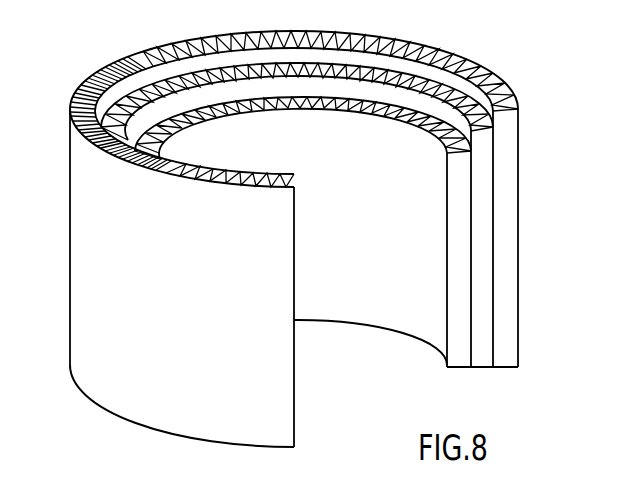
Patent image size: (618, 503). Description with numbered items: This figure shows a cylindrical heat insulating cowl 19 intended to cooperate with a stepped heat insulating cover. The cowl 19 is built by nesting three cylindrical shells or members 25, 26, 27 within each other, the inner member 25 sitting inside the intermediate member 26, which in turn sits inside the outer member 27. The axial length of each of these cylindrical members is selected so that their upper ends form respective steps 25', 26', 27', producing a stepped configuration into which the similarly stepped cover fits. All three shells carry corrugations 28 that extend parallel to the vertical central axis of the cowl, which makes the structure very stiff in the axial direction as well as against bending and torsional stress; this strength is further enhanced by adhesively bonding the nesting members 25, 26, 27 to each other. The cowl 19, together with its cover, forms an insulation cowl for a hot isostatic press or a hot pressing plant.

The heat insulating cowl 19 is at (80, 66).
The cylindrical member 25 is at (382, 271).
The cylindrical member 26 is at (478, 269).
The cylindrical member 27 is at (525, 249).
The step 25' is at (303, 133).
The step 26' is at (321, 87).
The step 27' is at (294, 101).
The corrugations 28 is at (70, 128).